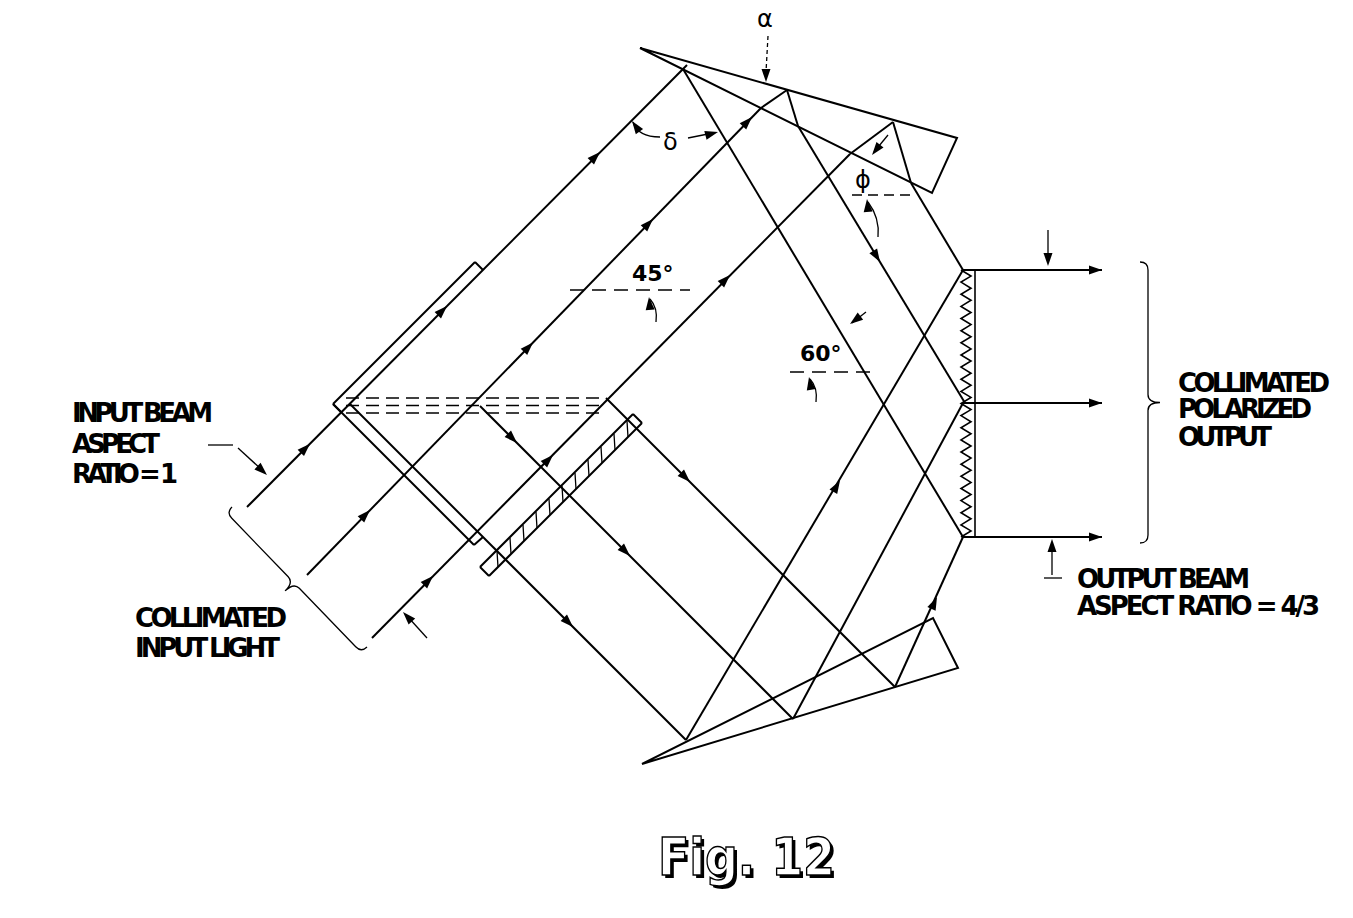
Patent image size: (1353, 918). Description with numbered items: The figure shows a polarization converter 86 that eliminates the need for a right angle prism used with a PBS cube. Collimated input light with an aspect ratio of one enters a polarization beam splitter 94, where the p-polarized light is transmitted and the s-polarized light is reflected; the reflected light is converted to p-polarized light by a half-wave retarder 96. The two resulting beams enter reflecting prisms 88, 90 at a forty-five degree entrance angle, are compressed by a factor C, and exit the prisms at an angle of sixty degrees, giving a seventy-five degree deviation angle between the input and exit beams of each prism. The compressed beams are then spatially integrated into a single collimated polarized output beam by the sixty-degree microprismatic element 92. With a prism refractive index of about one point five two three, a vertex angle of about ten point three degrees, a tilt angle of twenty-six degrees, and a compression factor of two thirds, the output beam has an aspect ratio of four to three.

The polarization converter 86 is at (520, 120).
The reflecting prism 88 is at (840, 100).
The reflecting prism 90 is at (833, 708).
The 60° microprismatic element 92 is at (972, 373).
The polarization beam splitter 94 is at (407, 334).
The half-wave retarder 96 is at (521, 547).